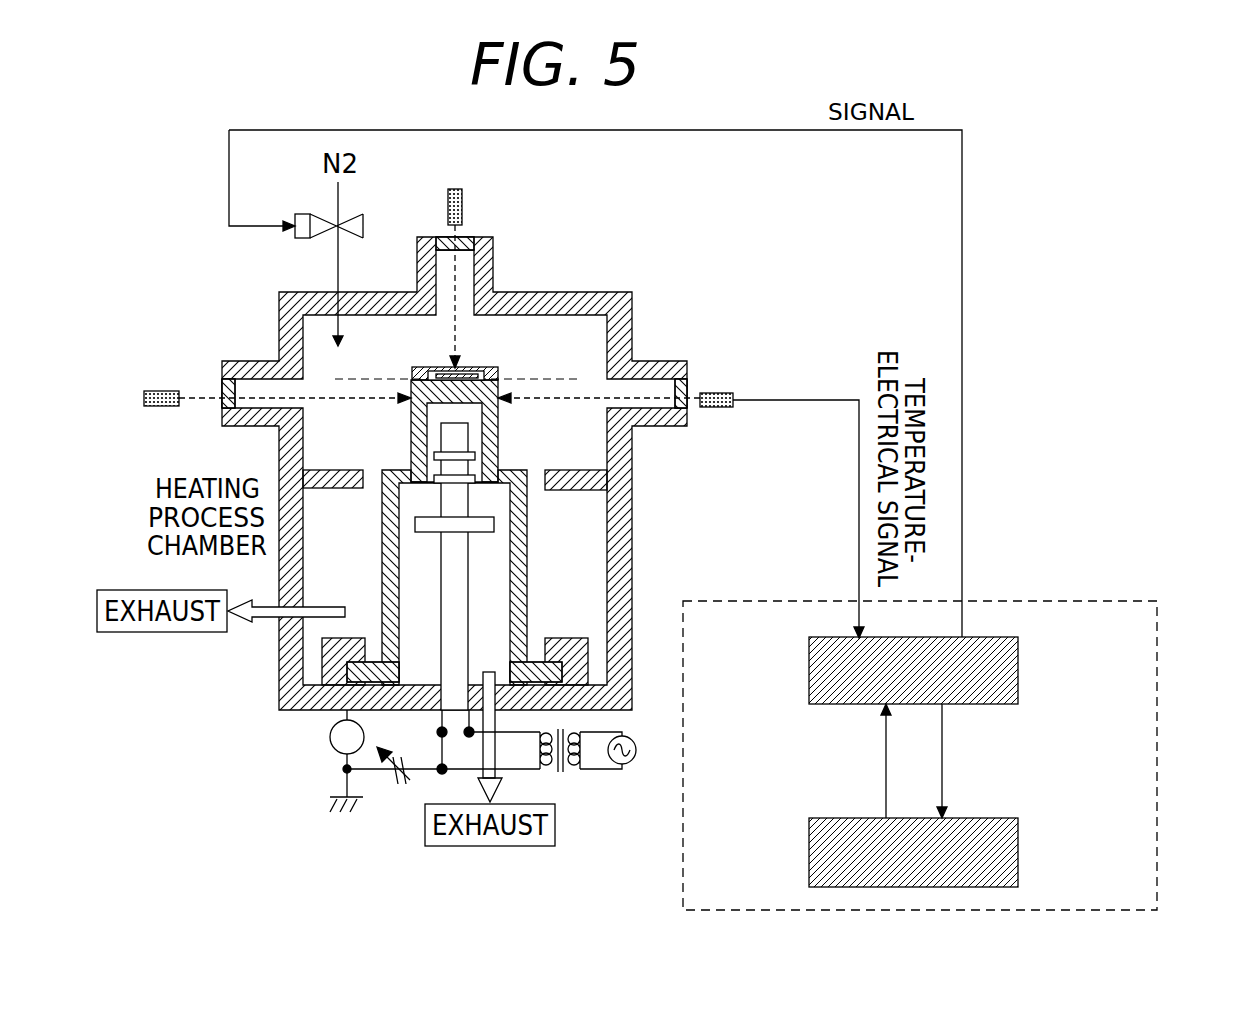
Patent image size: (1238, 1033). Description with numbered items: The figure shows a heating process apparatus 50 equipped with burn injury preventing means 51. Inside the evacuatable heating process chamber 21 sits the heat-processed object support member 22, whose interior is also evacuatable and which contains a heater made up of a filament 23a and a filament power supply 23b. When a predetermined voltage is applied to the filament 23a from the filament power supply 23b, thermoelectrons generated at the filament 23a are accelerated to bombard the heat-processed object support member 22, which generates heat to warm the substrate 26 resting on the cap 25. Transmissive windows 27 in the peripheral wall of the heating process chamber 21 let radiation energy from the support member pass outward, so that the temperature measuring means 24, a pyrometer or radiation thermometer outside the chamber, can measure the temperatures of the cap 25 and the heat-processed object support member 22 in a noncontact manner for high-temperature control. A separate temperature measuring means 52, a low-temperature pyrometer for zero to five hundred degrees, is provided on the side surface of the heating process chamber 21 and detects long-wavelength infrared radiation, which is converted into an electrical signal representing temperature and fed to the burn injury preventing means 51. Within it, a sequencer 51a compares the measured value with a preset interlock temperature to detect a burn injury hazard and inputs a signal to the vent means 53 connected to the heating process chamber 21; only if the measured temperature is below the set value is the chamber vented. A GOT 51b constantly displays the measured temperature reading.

The heating process chamber 21 is at (383, 291).
The heat-processed object support member 22 is at (383, 568).
The filament 23a is at (436, 472).
The filament power supply 23b is at (298, 844).
The temperature measuring means 24 is at (462, 200).
The cap 25 is at (478, 366).
The substrate 26 is at (432, 367).
The transmissive window 27 is at (465, 237).
The heating process apparatus 50 is at (480, 916).
The burn injury preventing means 51 is at (958, 755).
The sequencer 51a is at (1018, 668).
The GOT (Graphic Operation Terminal) 51b is at (1018, 850).
The temperature measuring means 52 is at (720, 393).
The vent means 53 is at (305, 213).